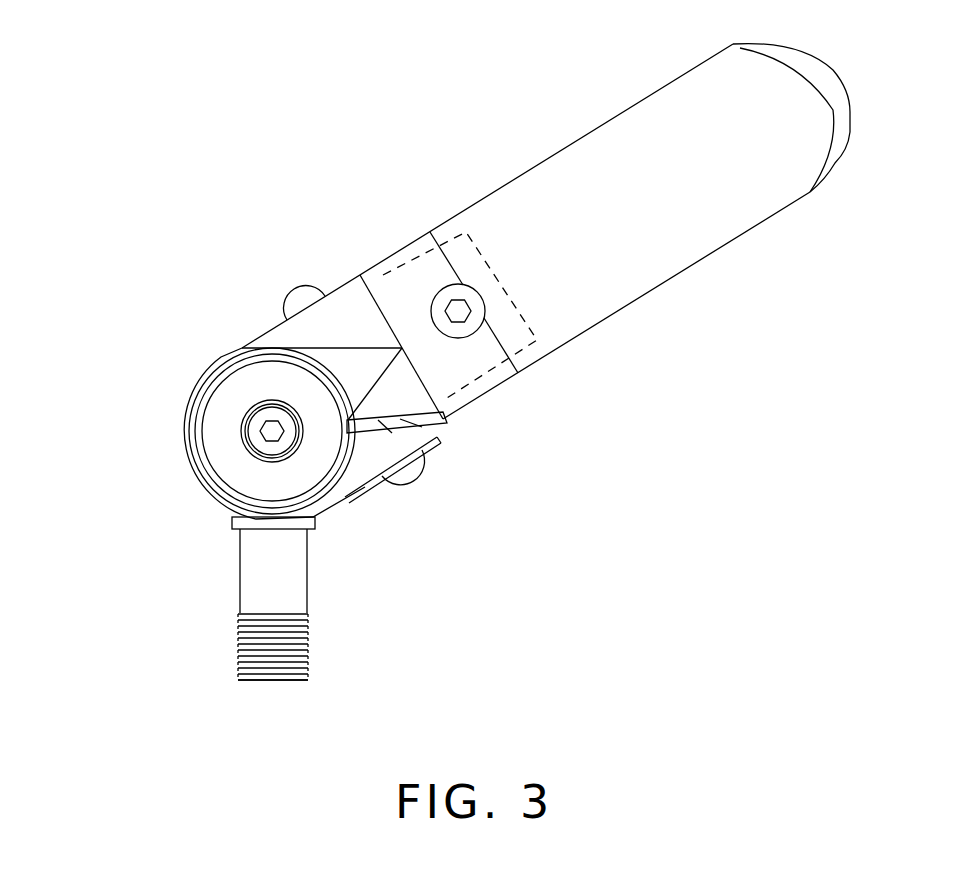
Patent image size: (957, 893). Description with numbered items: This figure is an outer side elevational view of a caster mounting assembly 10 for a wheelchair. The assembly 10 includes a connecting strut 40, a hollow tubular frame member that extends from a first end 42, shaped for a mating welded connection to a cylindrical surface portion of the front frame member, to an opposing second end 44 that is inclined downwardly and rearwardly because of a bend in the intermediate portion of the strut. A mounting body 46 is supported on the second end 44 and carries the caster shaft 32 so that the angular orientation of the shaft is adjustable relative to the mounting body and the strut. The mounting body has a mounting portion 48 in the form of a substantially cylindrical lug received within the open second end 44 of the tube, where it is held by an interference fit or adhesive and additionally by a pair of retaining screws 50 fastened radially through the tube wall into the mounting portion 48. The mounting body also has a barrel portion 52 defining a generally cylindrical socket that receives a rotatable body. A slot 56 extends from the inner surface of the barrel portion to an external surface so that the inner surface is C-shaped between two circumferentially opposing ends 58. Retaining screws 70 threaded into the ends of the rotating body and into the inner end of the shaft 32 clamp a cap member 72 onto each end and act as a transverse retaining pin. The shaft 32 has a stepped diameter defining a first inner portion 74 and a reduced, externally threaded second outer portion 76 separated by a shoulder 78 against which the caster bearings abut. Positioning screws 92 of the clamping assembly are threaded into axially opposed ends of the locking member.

The mounting assembly 10 is at (748, 636).
The caster shaft 32 is at (296, 684).
The connecting strut 40 is at (633, 302).
The first end 42 is at (851, 113).
The second end 44 is at (377, 303).
The mounting body 46 is at (278, 338).
The mounting portion 48 is at (490, 378).
The retaining screws 50 is at (467, 287).
The barrel portion 52 is at (193, 423).
The slot 56 is at (430, 422).
The circumferentially opposing ends 58 is at (375, 538).
The retaining screws 70 is at (253, 432).
The cap member 72 is at (233, 465).
The first inner portion 74 is at (237, 523).
The second outer portion 76 is at (260, 588).
The shoulder 78 is at (257, 532).
The positioning screws 92 is at (300, 288).